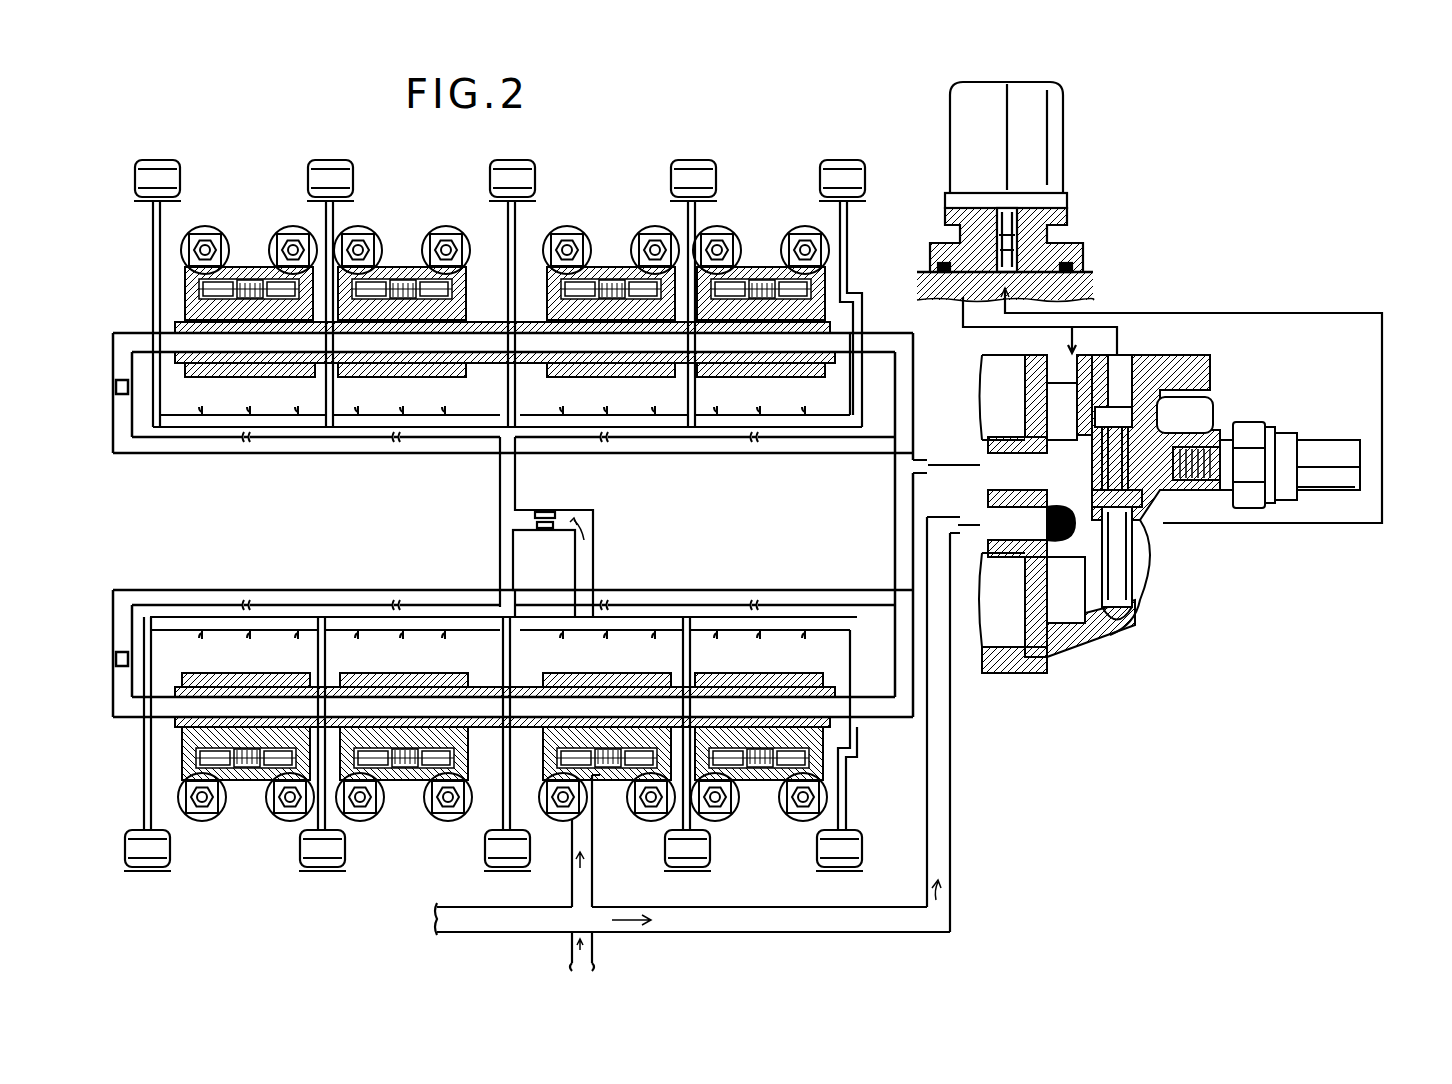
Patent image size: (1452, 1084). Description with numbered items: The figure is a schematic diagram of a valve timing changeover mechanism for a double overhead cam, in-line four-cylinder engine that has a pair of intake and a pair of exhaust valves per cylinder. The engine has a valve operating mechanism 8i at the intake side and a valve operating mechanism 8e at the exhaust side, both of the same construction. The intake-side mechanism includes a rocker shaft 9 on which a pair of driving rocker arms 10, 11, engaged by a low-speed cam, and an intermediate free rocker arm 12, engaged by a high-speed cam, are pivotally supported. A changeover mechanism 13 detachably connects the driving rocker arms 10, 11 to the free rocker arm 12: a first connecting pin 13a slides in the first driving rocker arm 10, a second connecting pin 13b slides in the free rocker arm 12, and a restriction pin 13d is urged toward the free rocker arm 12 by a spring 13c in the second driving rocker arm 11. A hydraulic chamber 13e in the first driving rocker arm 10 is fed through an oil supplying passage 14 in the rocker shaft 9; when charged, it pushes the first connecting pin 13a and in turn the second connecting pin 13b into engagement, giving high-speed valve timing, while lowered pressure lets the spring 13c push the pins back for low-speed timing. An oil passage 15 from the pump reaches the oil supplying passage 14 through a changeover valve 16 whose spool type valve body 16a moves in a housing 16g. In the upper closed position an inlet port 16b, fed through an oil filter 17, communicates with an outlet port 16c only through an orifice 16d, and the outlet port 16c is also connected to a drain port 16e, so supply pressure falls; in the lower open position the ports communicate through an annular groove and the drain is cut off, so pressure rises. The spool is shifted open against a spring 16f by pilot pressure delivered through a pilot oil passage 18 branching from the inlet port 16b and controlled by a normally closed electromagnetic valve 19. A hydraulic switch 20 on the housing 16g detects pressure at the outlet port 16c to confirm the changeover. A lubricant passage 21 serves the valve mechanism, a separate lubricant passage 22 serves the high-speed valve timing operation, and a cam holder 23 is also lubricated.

The valve operating mechanism at the exhaust valve side 8e is at (136, 294).
The valve operating mechanism at the intake valve side 8i is at (119, 753).
The rocker shaft 9 is at (483, 322).
The first driving rocker arm 10 is at (805, 377).
The second driving rocker arm 11 is at (715, 362).
The free rocker arm 12 is at (755, 354).
The changeover mechanism 13 is at (247, 265).
The first connecting pin 13a is at (815, 308).
The second connecting pin 13b is at (746, 274).
The spring 13c is at (717, 252).
The restriction pin 13d is at (712, 312).
The hydraulic chamber 13e is at (838, 314).
The oil supplying passage 14 is at (597, 350).
The oil passage 15 is at (945, 752).
The changeover valve 16 is at (1156, 600).
The spool type valve body 16a is at (1191, 409).
The inlet port 16b is at (1145, 532).
The outlet port 16c is at (1083, 477).
The orifice 16d is at (1077, 523).
The drain port 16e is at (1030, 398).
The spring 16f is at (1130, 620).
The housing 16g is at (1217, 433).
The oil filter 17 is at (1050, 565).
The pilot oil passage 18 is at (1382, 523).
The electromagnetic valve 19 is at (1068, 145).
The hydraulic switch 20 is at (1325, 447).
The lubricant passage 21 is at (673, 420).
The lubricant passage 22 is at (452, 455).
The cam holder 23 is at (847, 158).